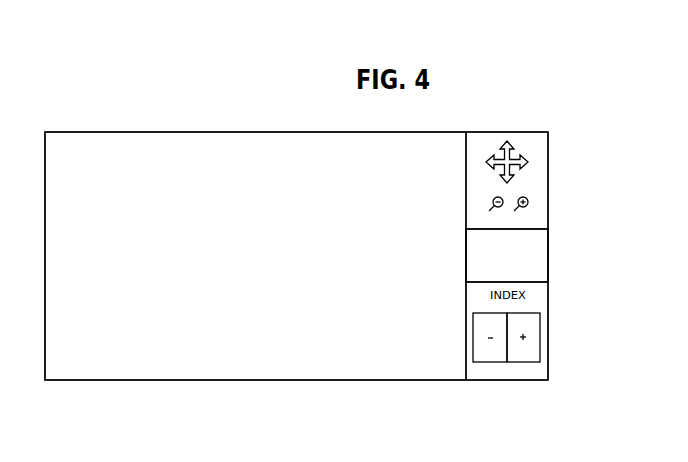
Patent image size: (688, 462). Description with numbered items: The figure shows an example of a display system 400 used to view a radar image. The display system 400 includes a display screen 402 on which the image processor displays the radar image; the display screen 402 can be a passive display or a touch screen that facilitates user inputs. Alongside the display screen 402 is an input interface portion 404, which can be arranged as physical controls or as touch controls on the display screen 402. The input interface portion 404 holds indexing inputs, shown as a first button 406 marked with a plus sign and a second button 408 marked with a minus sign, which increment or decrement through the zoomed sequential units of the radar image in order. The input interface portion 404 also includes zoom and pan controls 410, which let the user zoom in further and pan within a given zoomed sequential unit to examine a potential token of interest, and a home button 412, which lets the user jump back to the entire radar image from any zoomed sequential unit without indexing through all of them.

The display system 400 is at (112, 93).
The display screen 402 is at (255, 256).
The input interface portion 404 is at (511, 112).
The first button 406 is at (521, 363).
The second button 408 is at (487, 363).
The zoom and pan controls 410 is at (540, 176).
The home button 412 is at (548, 258).